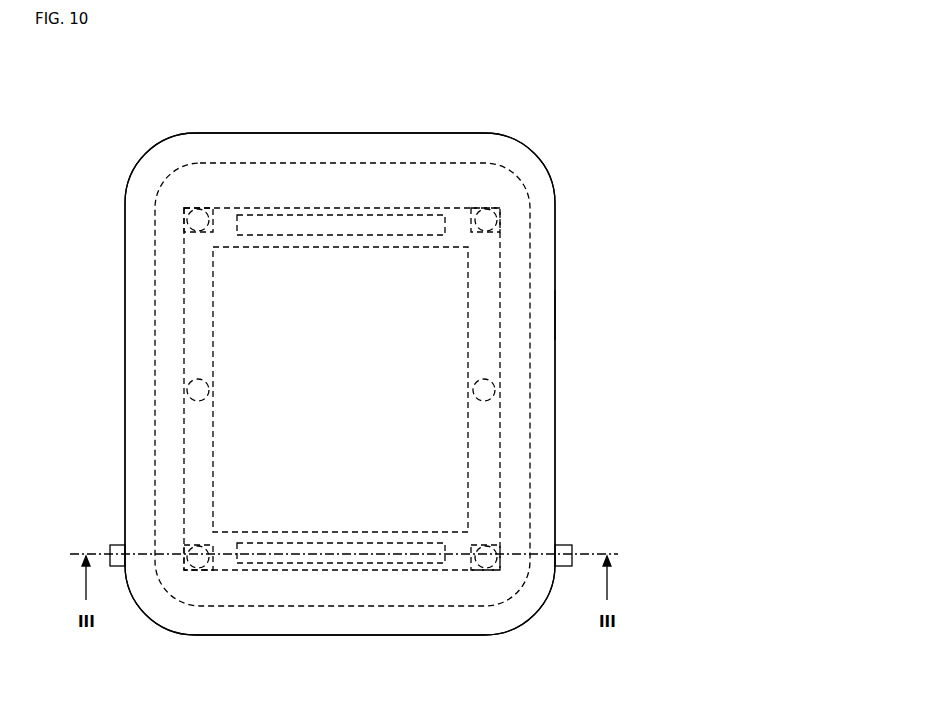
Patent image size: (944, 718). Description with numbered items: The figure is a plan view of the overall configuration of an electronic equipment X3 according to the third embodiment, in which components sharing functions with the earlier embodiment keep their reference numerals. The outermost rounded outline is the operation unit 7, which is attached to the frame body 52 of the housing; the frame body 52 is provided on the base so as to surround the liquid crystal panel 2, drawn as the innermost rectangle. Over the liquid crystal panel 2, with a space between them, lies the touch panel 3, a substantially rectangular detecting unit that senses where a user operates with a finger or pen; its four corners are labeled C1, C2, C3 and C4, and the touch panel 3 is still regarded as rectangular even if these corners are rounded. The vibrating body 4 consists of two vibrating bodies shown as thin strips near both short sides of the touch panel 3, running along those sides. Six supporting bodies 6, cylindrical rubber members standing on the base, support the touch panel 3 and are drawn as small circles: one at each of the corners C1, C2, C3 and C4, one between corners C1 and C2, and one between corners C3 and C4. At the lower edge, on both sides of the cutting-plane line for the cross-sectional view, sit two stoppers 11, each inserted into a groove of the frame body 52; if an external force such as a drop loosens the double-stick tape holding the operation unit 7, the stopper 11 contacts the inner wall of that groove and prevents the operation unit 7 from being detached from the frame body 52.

The electronic equipment X3 is at (552, 82).
The operation unit 7 is at (233, 146).
The frame body 52 is at (557, 314).
The touch panel 3 is at (487, 262).
The liquid crystal panel 2 is at (455, 459).
The vibrating body 4 is at (346, 226).
The supporting body 6 is at (189, 224).
The corner C1 is at (198, 218).
The corner C2 is at (172, 592).
The corner C3 is at (486, 218).
The corner C4 is at (512, 595).
The stopper 11 is at (110, 547).